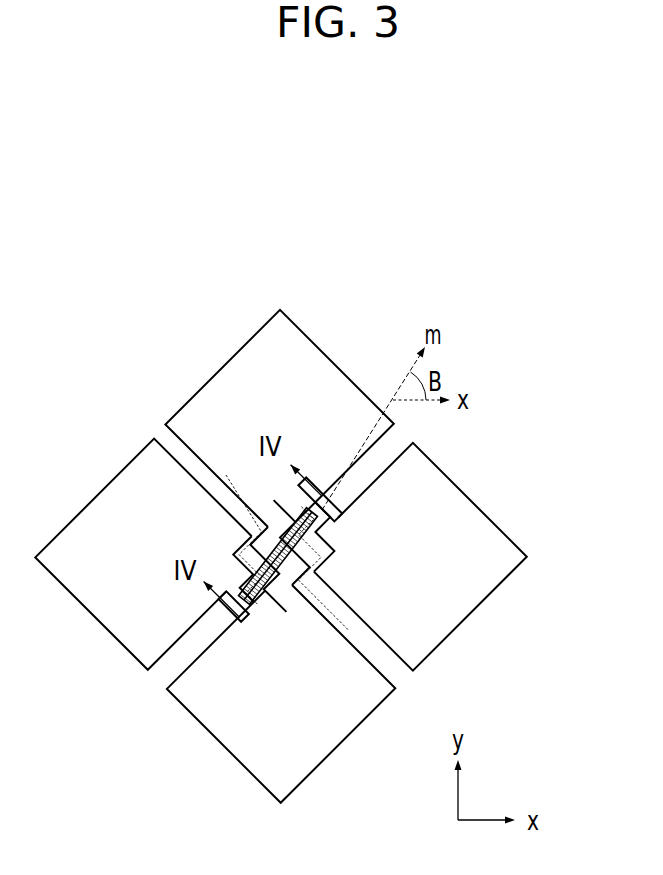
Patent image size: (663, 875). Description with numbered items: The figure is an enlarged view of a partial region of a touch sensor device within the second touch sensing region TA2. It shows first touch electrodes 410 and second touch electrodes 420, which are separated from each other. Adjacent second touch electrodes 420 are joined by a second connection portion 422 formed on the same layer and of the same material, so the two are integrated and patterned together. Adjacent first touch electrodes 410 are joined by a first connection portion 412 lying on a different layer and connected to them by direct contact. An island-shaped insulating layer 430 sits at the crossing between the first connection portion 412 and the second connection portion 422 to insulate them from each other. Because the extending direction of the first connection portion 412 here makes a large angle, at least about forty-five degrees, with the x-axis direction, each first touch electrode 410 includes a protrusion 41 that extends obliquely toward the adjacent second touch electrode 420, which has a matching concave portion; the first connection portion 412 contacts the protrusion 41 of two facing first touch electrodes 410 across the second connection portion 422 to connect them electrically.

The first touch electrode 410 is at (103, 598).
The first connection portion 412 is at (267, 600).
The second touch electrode 420 is at (313, 378).
The second connection portion 422 is at (226, 475).
The insulating layer 430 is at (293, 605).
The protrusion 41 is at (330, 506).
The second touch sensing region TA2 is at (164, 366).